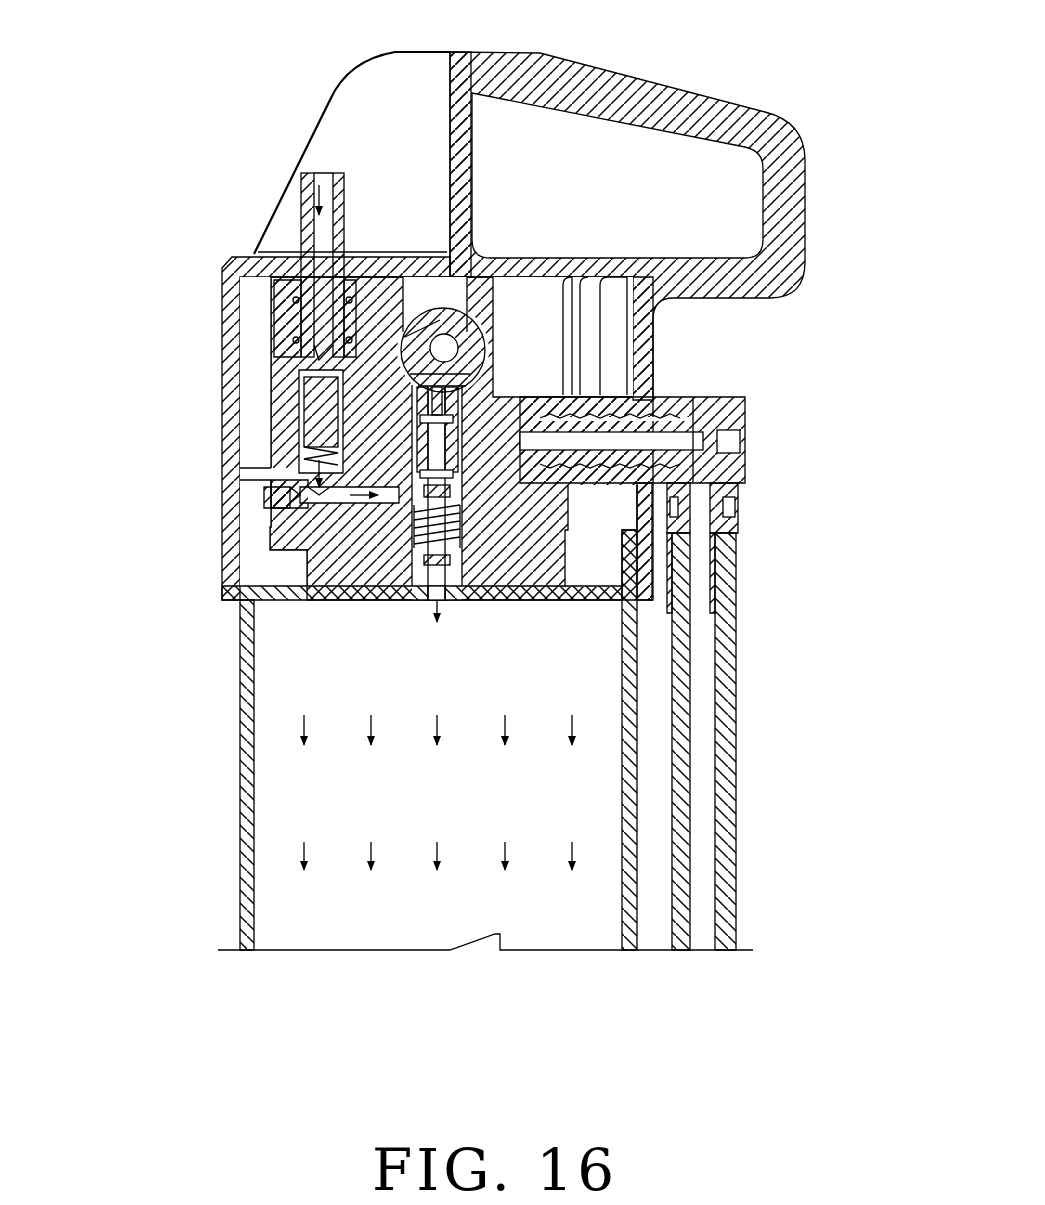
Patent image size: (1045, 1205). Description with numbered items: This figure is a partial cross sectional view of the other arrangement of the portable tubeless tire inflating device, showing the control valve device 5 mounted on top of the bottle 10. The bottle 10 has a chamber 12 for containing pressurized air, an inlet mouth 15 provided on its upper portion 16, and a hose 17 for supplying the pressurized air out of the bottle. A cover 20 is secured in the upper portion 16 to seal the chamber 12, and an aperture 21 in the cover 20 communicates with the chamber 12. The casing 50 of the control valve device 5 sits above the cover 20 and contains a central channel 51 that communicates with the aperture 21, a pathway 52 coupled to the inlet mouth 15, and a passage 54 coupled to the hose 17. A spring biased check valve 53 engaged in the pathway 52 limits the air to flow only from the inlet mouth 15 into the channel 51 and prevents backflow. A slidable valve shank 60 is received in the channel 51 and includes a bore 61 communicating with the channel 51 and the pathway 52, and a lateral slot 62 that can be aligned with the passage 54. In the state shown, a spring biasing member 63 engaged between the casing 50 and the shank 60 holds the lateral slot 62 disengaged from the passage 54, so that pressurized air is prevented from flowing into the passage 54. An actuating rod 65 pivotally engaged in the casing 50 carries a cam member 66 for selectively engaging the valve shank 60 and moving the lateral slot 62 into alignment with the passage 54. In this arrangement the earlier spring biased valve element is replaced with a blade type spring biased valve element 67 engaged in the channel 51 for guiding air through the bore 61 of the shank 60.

The control valve device 5 is at (190, 195).
The bottle 10 is at (245, 835).
The chamber 12 is at (282, 935).
The inlet mouth 15 is at (303, 190).
The upper portion 16 is at (228, 277).
The hose 17 is at (728, 893).
The cover 20 is at (290, 600).
The aperture 21 is at (433, 602).
The casing 50 is at (505, 598).
The channel 51 is at (280, 487).
The pathway 52 is at (298, 472).
The spring biased check valve 53 is at (300, 395).
The passage 54 is at (745, 478).
The valve shank 60 is at (420, 332).
The bore 61 is at (690, 118).
The lateral slot 62 is at (460, 392).
The spring biasing member 63 is at (407, 585).
The actuating rod 65 is at (455, 385).
The cam member 66 is at (505, 310).
The blade type spring biased valve element 67 is at (670, 583).